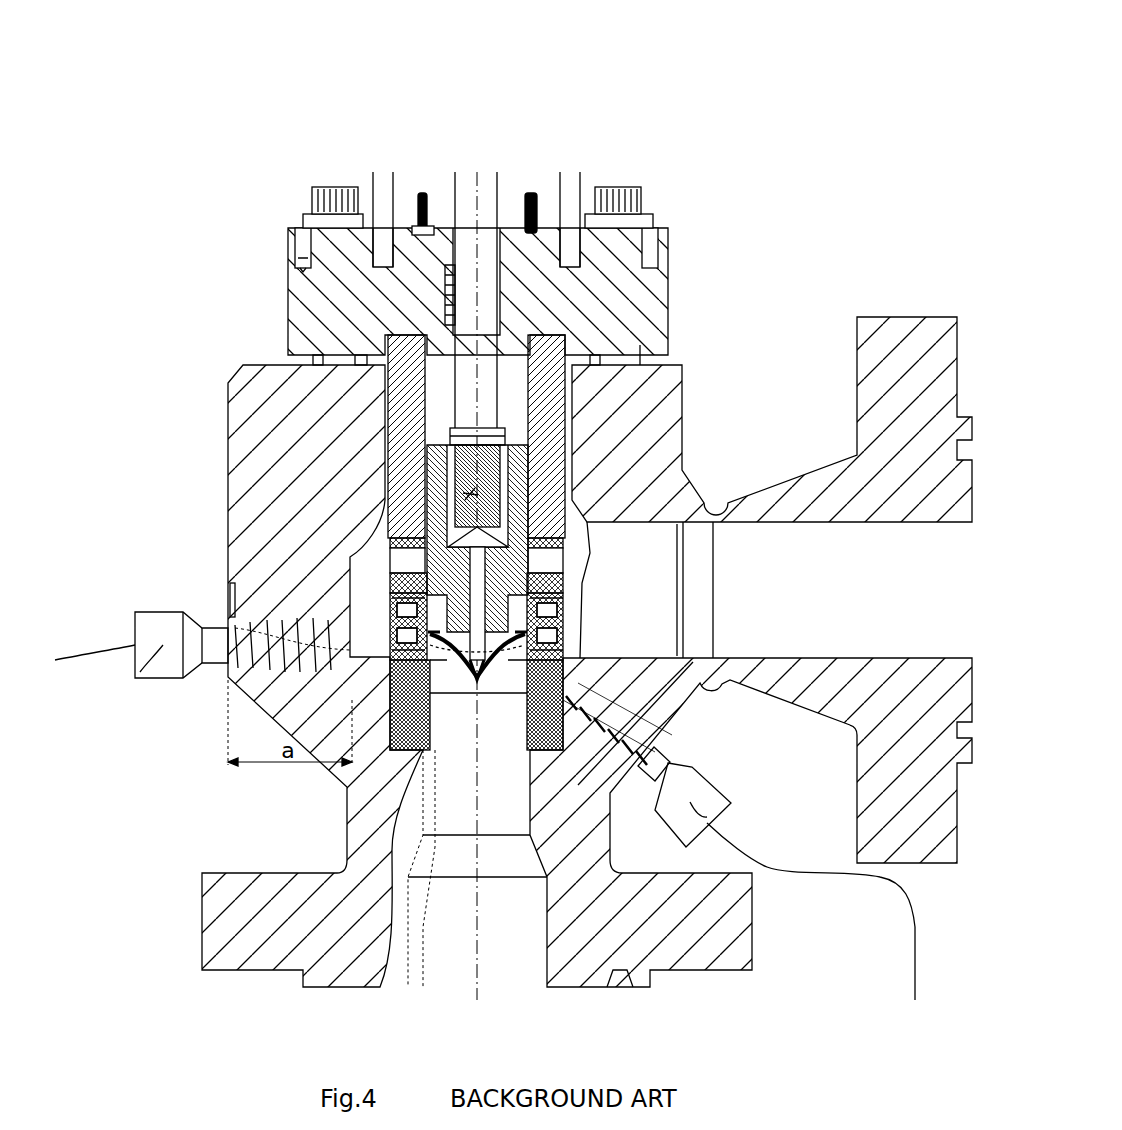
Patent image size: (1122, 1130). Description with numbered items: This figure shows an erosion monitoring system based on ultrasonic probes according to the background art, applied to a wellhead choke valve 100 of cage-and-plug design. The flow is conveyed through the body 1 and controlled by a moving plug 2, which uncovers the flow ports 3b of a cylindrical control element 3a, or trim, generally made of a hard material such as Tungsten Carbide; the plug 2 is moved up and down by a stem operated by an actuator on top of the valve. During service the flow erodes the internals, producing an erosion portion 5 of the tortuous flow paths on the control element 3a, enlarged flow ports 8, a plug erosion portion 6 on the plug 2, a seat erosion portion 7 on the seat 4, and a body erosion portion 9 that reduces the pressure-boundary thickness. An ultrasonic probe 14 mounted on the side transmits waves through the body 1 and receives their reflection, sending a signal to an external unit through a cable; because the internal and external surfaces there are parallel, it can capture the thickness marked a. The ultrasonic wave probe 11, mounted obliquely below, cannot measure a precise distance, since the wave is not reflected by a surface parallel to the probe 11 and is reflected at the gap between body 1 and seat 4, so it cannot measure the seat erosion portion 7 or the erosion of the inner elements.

The choke valve 100 is at (766, 164).
The body 1 is at (340, 807).
The plug 2 is at (230, 617).
The control element 3a is at (400, 585).
The flow ports 3b is at (567, 643).
The seat 4 is at (565, 693).
The erosion portion 5 is at (427, 625).
The plug erosion portion 6 is at (530, 628).
The seat erosion portion 7 is at (540, 678).
The enlarged flow ports 8 is at (470, 670).
The body erosion portion 9 is at (414, 780).
The ultrasonic wave probe 11 is at (712, 815).
The ultrasonic probe 14 is at (163, 645).